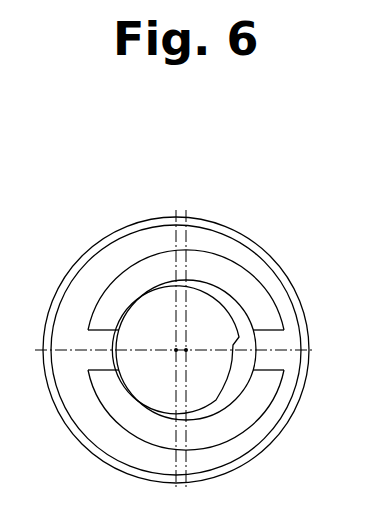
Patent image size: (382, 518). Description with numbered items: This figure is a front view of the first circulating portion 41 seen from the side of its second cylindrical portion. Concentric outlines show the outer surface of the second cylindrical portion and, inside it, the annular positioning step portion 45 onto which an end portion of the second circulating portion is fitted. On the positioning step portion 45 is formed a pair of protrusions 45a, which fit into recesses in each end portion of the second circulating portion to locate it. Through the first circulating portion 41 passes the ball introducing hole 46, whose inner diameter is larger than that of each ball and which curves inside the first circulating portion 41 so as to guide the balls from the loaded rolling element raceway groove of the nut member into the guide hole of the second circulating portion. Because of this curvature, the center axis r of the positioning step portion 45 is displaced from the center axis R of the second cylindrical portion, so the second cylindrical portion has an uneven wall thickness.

The first circulating portion 41 is at (111, 190).
The positioning step portion 45 is at (237, 277).
The protrusions 45a is at (273, 340).
The ball introducing hole 46 is at (126, 303).
The center axis of the second cylindrical portion R is at (176, 350).
The center axis of the positioning step portion r is at (186, 350).